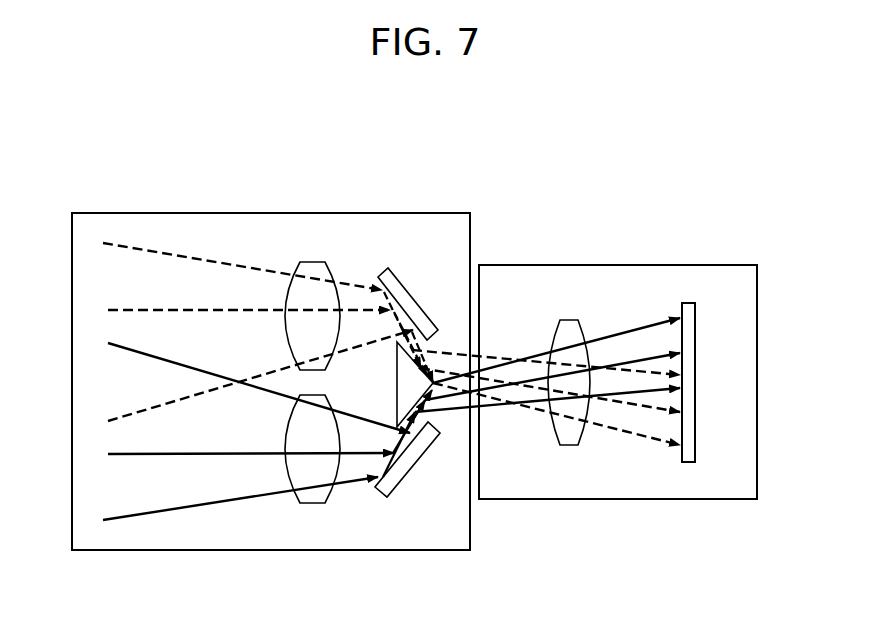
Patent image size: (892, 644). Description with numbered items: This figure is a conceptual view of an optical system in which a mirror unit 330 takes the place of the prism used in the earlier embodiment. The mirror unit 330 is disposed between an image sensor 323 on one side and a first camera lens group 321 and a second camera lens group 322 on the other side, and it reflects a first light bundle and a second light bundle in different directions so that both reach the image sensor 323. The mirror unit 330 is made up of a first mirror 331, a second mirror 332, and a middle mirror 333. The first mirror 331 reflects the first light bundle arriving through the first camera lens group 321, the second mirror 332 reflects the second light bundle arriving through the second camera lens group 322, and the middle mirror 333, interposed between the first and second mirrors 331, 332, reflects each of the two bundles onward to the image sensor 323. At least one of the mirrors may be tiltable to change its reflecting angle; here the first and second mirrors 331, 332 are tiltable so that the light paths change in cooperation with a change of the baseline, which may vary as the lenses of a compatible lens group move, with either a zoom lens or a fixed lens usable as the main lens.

The first camera lens group 321 is at (313, 262).
The second camera lens group 322 is at (310, 498).
The image sensor 323 is at (690, 310).
The mirror unit 330 is at (392, 163).
The first mirror 331 is at (404, 280).
The second mirror 332 is at (432, 433).
The middle mirror 333 is at (421, 378).